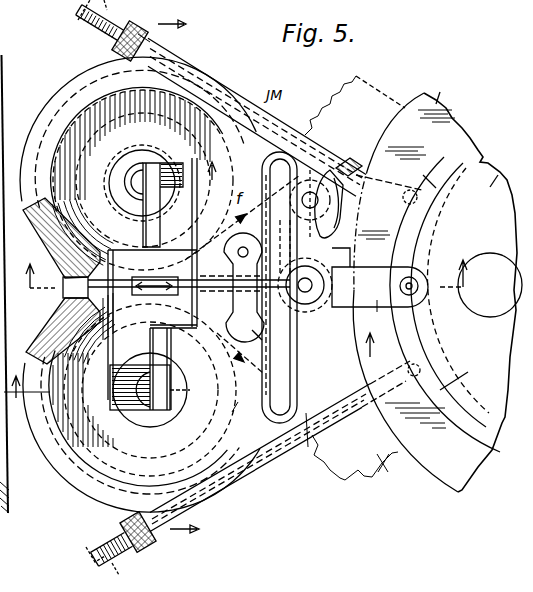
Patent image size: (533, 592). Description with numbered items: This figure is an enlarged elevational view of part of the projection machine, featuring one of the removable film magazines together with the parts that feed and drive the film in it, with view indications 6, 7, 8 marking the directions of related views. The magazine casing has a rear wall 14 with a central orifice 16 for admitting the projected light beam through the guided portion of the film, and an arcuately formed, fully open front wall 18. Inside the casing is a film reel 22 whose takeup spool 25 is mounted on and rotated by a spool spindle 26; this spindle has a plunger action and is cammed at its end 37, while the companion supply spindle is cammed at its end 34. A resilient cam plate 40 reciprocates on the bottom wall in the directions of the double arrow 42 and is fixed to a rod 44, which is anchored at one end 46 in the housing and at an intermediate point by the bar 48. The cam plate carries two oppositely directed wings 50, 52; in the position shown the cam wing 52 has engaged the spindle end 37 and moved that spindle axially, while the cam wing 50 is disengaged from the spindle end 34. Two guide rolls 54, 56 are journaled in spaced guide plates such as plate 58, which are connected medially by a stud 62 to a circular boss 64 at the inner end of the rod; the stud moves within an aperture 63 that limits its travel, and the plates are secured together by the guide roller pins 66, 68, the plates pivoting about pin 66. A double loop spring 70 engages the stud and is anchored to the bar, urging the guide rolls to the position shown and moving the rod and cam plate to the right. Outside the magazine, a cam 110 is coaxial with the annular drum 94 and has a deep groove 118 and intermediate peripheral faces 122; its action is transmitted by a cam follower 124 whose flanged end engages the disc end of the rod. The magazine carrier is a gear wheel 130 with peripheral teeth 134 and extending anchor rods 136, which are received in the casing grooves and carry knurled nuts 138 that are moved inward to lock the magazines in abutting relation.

The direction arrow 6 is at (178, 277).
The direction arrow 7 is at (199, 365).
The direction arrow 8 is at (272, 282).
The rear wall 14 is at (52, 325).
The orifice 16 is at (62, 289).
The front wall 18 is at (435, 342).
The film reel 22 is at (84, 228).
The takeup spool 25 is at (72, 470).
The spool spindle 26 is at (137, 412).
The tapered spindle end 34 is at (134, 183).
The tapered spindle end 37 is at (190, 488).
The resilient cam plate 40 is at (132, 253).
The double arrow 42 is at (155, 278).
The rod 44 is at (215, 280).
The rod end 46 is at (114, 583).
The bar 48 is at (238, 412).
The cam wing 50 is at (178, 170).
The cam wing 52 is at (168, 396).
The guide roll 54 is at (350, 162).
The guide roll 56 is at (298, 443).
The guide plate 58 is at (380, 398).
The stud 62 is at (306, 280).
The aperture 63 is at (268, 334).
The circular boss 64 is at (297, 406).
The guide roller pin 66 is at (268, 410).
The guide roller pin 68 is at (322, 168).
The double loop spring 70 is at (286, 150).
The annular drum 94 is at (445, 90).
The cam 110 is at (506, 171).
The deep groove 118 is at (425, 230).
The intermediate peripheral face 122 is at (446, 287).
The cam follower 124 is at (372, 316).
The gear wheel 130 is at (356, 463).
The peripheral teeth 134 is at (332, 470).
The anchor rod 136 is at (236, 128).
The knurled nut 138 is at (112, 44).